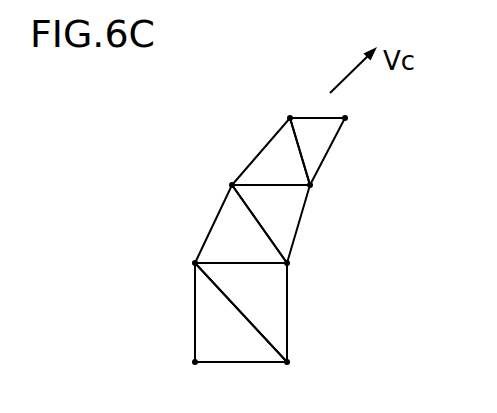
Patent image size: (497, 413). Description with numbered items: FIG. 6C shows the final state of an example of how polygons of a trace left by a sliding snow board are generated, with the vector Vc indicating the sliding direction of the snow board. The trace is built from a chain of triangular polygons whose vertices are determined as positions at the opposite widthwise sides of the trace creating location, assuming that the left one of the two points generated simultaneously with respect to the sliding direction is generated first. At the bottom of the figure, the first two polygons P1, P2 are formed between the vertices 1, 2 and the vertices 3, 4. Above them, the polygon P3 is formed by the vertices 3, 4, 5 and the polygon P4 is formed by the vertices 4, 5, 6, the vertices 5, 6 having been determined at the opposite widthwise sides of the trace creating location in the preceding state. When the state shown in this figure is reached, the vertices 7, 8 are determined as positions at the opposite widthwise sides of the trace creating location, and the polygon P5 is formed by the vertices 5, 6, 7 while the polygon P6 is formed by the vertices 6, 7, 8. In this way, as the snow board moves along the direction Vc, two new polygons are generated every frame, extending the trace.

The vertex 1 is at (184, 368).
The vertex 2 is at (299, 368).
The vertex 3 is at (183, 266).
The vertex 4 is at (299, 266).
The vertex 5 is at (215, 184).
The vertex 6 is at (323, 184).
The vertex 7 is at (276, 109).
The vertex 8 is at (355, 109).
The polygon P1 is at (241, 312).
The polygon P2 is at (241, 312).
The polygon P3 is at (241, 224).
The polygon P4 is at (271, 224).
The polygon P5 is at (271, 152).
The polygon P6 is at (317, 151).